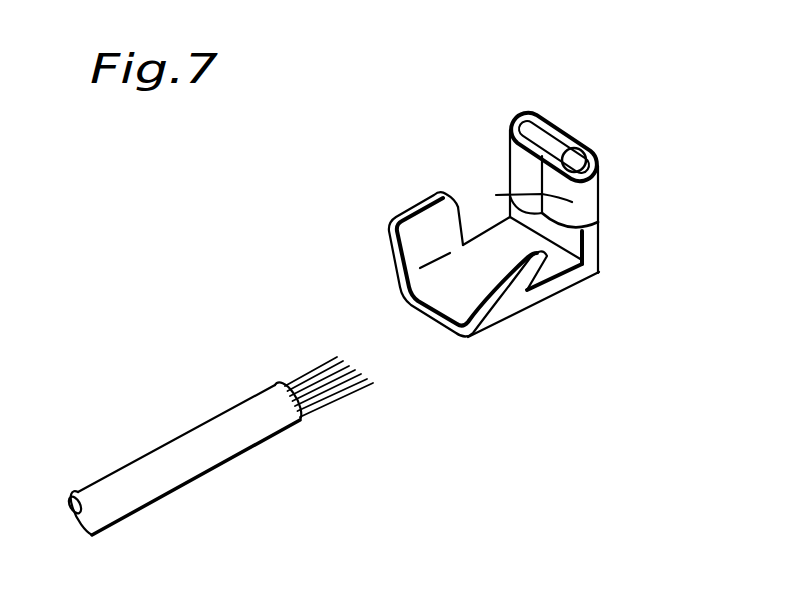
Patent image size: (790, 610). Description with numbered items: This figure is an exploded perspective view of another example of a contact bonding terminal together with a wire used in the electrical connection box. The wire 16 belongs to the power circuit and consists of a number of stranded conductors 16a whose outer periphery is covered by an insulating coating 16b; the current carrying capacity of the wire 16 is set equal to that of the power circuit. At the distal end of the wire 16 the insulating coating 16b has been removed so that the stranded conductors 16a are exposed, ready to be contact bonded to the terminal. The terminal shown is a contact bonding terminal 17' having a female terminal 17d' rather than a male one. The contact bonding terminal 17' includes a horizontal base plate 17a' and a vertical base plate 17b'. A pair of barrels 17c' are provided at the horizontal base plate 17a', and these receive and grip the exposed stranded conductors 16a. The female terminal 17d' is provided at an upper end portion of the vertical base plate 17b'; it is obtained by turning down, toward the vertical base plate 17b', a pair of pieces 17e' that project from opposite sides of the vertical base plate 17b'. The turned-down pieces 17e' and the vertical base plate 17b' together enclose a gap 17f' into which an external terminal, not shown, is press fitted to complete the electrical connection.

The contact bonding terminal 17' is at (457, 198).
The horizontal base plate 17a' is at (531, 304).
The vertical base plate 17b' is at (587, 276).
The barrels 17c' is at (398, 259).
The female terminal 17d' is at (596, 144).
The pieces 17e' is at (476, 165).
The gap 17f' is at (554, 92).
The wire 16 is at (206, 474).
The stranded conductors 16a is at (337, 402).
The insulating coating 16b is at (212, 417).